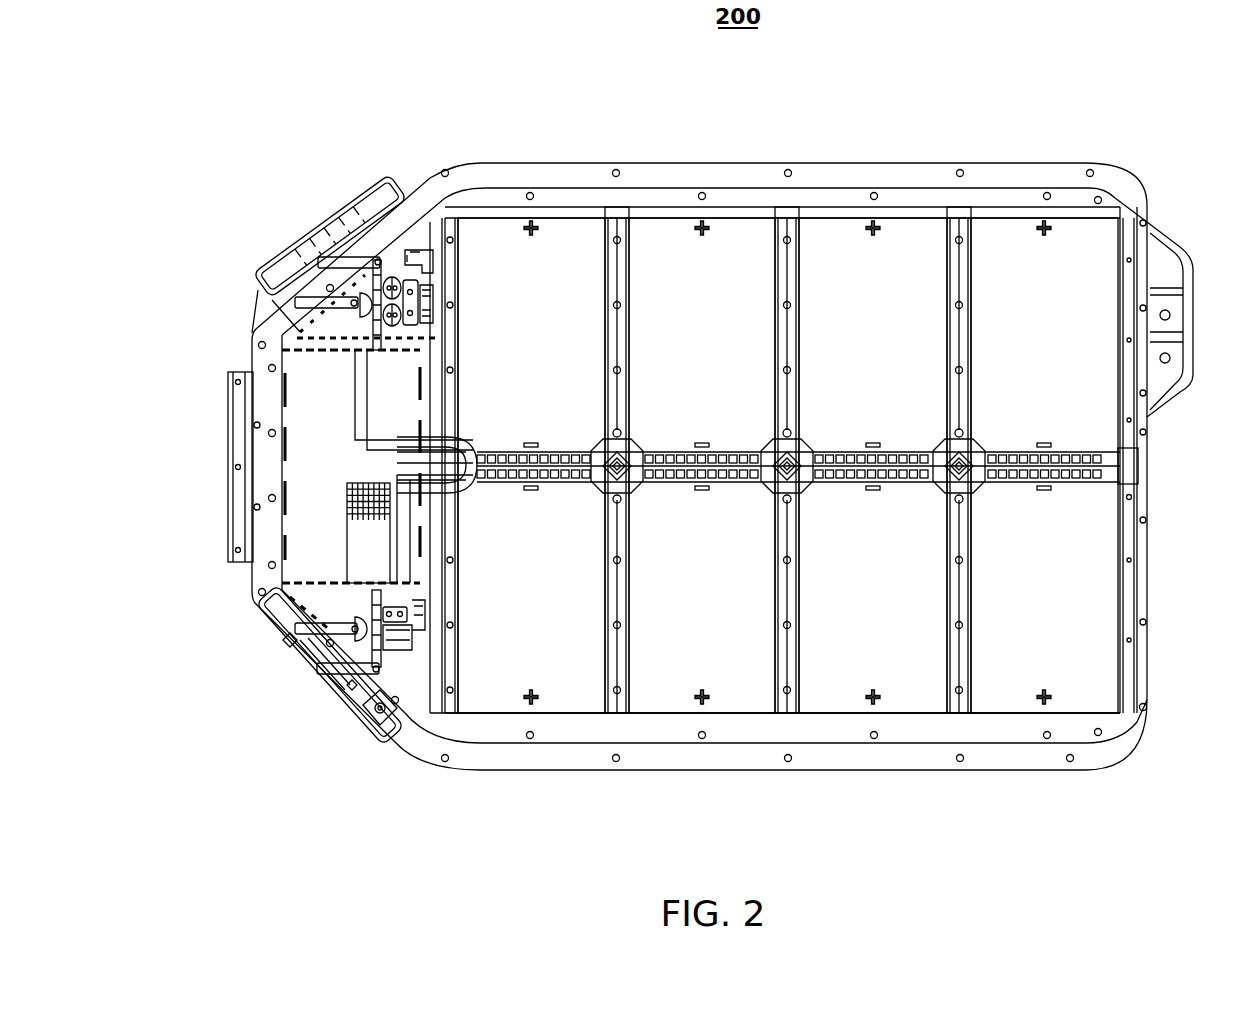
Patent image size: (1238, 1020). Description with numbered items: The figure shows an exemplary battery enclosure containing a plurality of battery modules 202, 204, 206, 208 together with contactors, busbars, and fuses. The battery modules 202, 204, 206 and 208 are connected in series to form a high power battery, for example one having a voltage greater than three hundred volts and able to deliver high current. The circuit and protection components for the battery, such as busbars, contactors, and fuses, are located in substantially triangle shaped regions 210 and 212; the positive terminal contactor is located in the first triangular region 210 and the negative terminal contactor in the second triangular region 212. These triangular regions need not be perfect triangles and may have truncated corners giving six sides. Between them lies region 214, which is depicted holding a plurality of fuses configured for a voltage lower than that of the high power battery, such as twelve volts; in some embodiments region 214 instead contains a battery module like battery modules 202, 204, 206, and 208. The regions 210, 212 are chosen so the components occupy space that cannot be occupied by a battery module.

The battery module 202 is at (503, 242).
The battery module 204 is at (672, 242).
The battery module 206 is at (842, 242).
The battery module 208 is at (1013, 242).
The triangular region 210 is at (302, 335).
The triangular region 212 is at (302, 597).
The region 214 is at (282, 393).